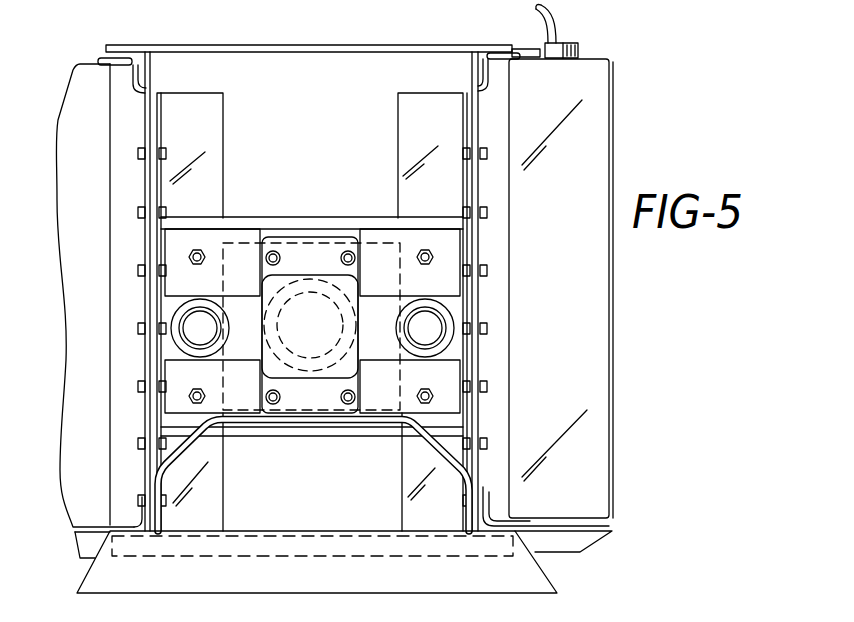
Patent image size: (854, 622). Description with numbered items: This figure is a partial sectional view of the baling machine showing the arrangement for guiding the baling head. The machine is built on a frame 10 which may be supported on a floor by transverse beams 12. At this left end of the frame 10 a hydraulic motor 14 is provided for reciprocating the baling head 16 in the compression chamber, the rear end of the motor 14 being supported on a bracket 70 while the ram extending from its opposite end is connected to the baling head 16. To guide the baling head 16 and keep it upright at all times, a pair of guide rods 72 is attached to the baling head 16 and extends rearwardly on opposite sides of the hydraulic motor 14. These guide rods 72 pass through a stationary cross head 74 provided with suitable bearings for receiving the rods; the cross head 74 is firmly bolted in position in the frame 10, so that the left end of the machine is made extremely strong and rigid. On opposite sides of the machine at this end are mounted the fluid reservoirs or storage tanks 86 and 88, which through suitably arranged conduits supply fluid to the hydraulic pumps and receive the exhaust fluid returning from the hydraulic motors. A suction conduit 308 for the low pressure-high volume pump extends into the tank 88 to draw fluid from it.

The frame 10 is at (195, 43).
The transverse beams 12 is at (557, 593).
The hydraulic motor 14 is at (323, 334).
The baling head 16 is at (325, 159).
The bracket 70 is at (437, 438).
The guide rods 72 is at (195, 328).
The stationary cross head 74 is at (212, 201).
The fluid reservoir 86 is at (78, 490).
The fluid reservoir 88 is at (600, 361).
The suction conduit 308 is at (538, 16).